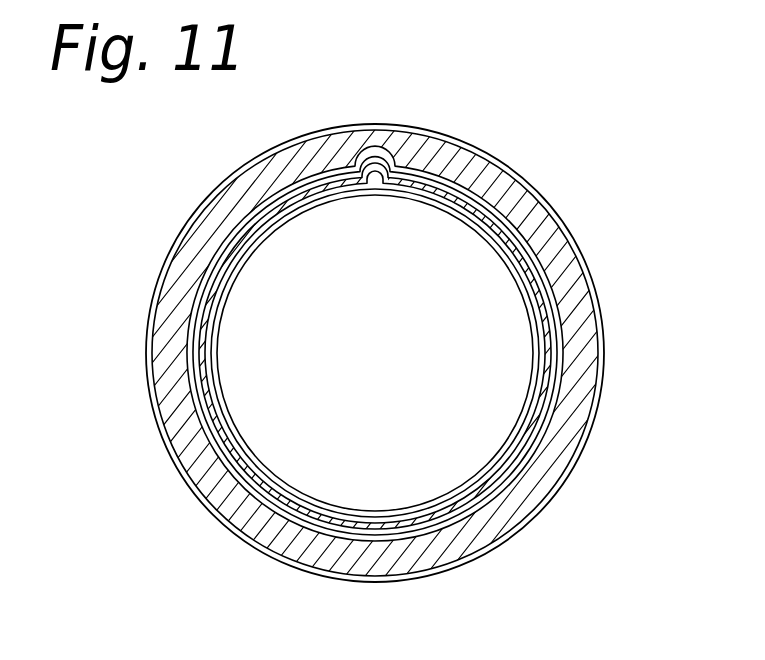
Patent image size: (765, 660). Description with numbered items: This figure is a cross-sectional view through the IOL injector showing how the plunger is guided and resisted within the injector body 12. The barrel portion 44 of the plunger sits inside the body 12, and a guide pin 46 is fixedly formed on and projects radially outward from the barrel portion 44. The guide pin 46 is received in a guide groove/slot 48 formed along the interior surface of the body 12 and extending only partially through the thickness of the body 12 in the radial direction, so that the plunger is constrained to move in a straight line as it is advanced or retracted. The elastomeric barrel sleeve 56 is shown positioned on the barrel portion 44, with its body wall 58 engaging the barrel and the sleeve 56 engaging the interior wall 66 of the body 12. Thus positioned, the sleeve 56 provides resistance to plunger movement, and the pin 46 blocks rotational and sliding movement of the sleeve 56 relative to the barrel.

The injector body 12 is at (217, 212).
The barrel portion 44 is at (452, 312).
The guide pin 46 is at (392, 162).
The guide groove/slot 48 is at (373, 160).
The barrel sleeve 56 is at (453, 173).
The body wall 58 is at (285, 555).
The interior wall 66 is at (216, 428).